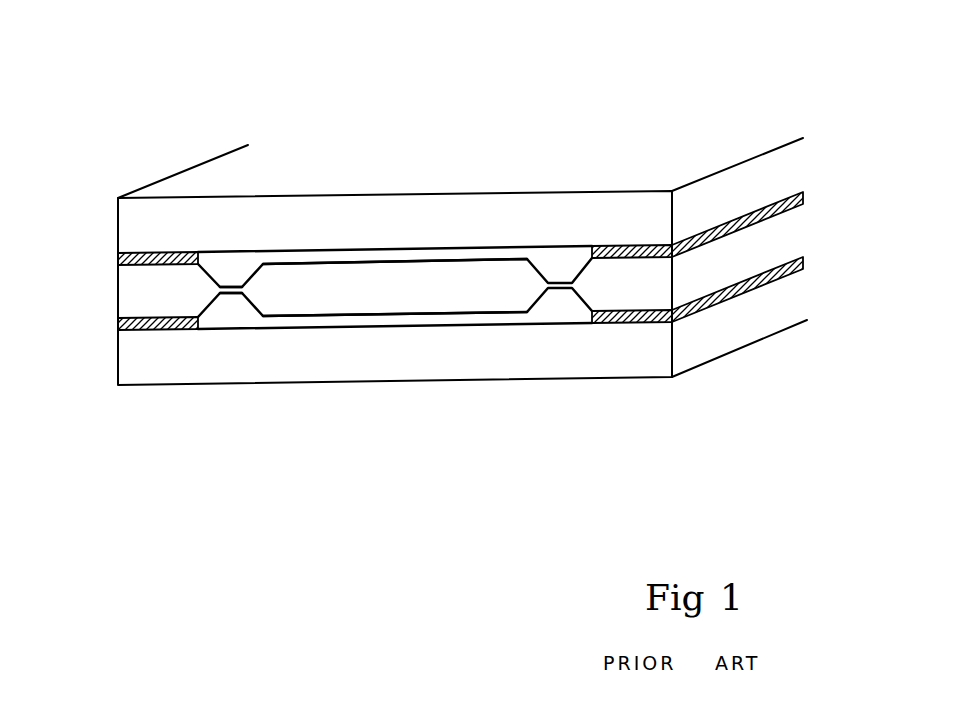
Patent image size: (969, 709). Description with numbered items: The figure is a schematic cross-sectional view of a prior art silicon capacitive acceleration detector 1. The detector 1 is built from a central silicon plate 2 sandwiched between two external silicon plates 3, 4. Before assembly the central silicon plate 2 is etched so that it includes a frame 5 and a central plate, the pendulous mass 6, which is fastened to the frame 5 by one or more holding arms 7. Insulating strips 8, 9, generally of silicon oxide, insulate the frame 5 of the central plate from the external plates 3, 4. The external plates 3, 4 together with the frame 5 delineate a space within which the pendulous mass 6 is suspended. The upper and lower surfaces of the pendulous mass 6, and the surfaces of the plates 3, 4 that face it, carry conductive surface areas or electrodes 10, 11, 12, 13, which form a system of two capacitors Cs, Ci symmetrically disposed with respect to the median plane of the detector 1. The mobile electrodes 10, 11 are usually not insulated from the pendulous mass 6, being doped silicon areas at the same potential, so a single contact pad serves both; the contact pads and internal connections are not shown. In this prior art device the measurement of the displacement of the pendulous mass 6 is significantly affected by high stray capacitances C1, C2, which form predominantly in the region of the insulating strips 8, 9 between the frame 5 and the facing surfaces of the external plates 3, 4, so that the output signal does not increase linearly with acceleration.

The detector 1 is at (463, 67).
The central silicon plate 2 is at (782, 243).
The external silicon plate 3 is at (768, 177).
The external silicon plate 4 is at (787, 303).
The frame 5 is at (148, 295).
The pendulous mass 6 is at (383, 293).
The holding arm 7 is at (233, 298).
The insulating strip 8 is at (805, 200).
The insulating strip 9 is at (805, 265).
The electrode 10 is at (318, 257).
The electrode 11 is at (325, 318).
The electrode 12 is at (445, 248).
The electrode 13 is at (438, 322).
The stray capacitance C1 is at (115, 260).
The stray capacitance C2 is at (115, 325).
The capacitor Cs is at (525, 240).
The capacitor Ci is at (513, 335).